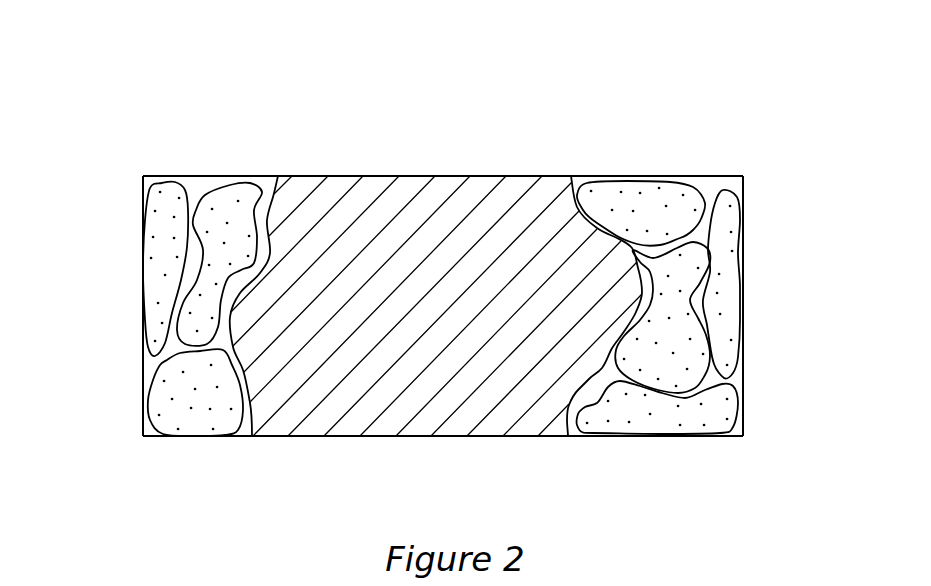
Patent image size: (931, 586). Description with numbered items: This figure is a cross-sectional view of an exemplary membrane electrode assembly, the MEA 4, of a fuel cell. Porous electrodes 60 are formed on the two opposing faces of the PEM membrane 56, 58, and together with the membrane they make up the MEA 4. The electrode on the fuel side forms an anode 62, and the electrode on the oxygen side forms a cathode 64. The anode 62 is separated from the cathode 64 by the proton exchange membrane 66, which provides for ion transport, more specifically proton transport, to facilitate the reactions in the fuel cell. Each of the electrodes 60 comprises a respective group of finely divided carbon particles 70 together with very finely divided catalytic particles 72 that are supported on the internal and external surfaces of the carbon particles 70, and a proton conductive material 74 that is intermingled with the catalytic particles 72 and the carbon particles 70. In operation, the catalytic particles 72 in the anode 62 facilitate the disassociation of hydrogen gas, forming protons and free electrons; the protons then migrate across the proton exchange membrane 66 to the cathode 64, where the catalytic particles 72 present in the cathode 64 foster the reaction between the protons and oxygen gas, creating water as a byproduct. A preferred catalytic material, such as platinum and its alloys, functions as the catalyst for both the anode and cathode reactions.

The membrane electrode assembly 4 is at (739, 120).
The first face of the PEM membrane 56 is at (277, 182).
The second face of the PEM membrane 58 is at (568, 183).
The porous electrodes 60 is at (460, 306).
The anode 62 is at (140, 348).
The cathode 64 is at (743, 323).
The proton exchange membrane 66 is at (452, 212).
The carbon particles 70 is at (158, 208).
The catalytic particles 72 is at (182, 184).
The proton conductive material 74 is at (148, 387).